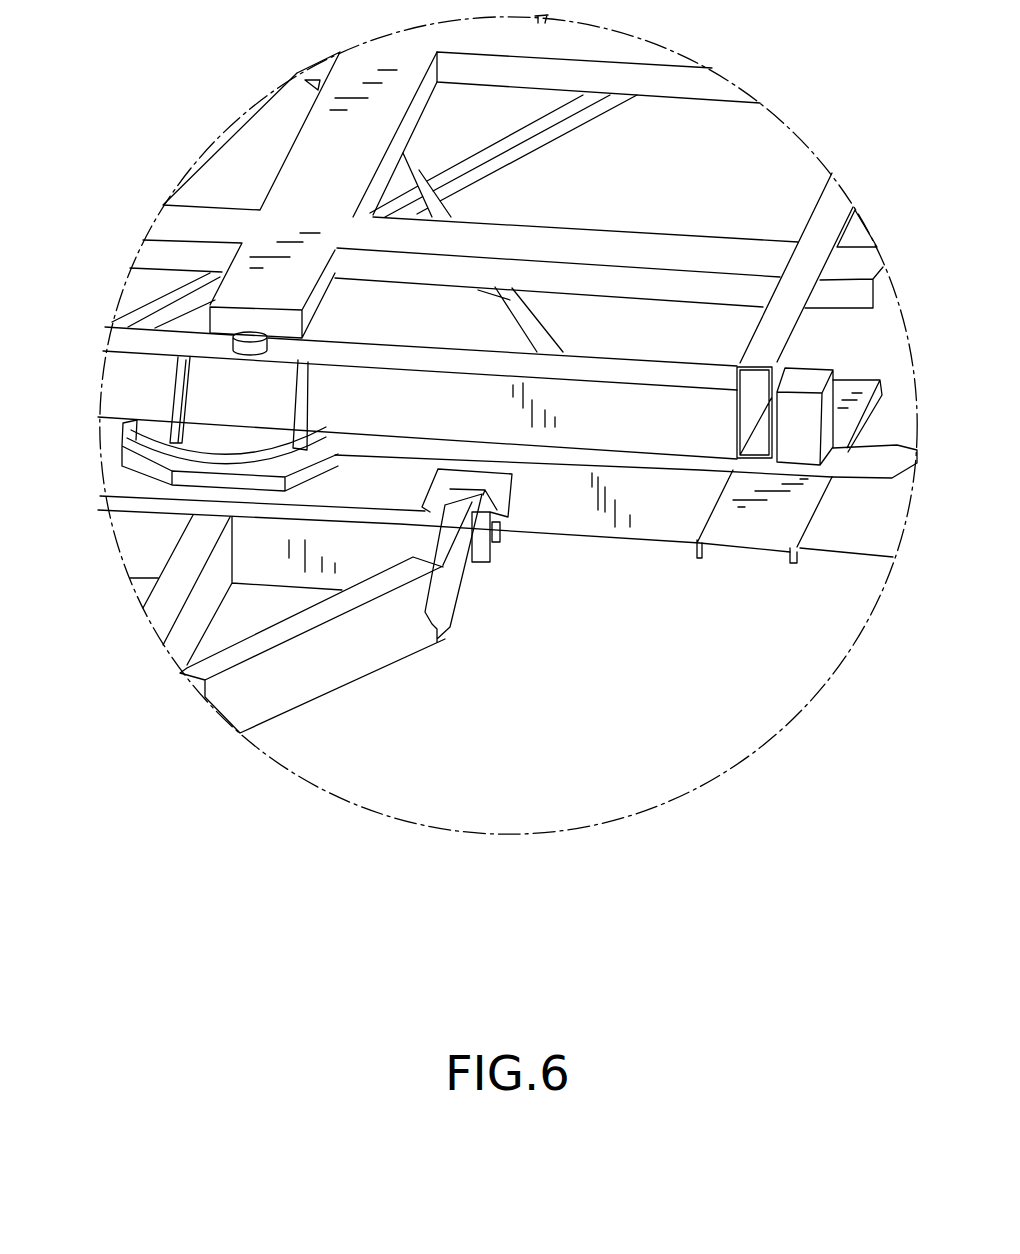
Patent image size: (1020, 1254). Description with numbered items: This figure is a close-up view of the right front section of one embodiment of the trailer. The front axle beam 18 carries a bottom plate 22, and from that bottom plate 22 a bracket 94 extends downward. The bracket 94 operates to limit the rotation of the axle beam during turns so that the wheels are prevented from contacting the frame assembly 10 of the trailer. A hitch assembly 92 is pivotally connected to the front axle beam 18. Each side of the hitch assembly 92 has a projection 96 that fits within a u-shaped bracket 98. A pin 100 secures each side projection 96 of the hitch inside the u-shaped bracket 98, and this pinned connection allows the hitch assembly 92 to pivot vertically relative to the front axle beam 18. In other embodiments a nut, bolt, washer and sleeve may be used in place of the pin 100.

The frame assembly 10 is at (837, 193).
The front axle beam 18 is at (640, 541).
The bottom plate 22 is at (253, 440).
The hitch assembly 92 is at (320, 698).
The bracket 94 is at (122, 468).
The projection 96 is at (440, 508).
The u-shaped bracket 98 is at (478, 562).
The pin 100 is at (500, 540).